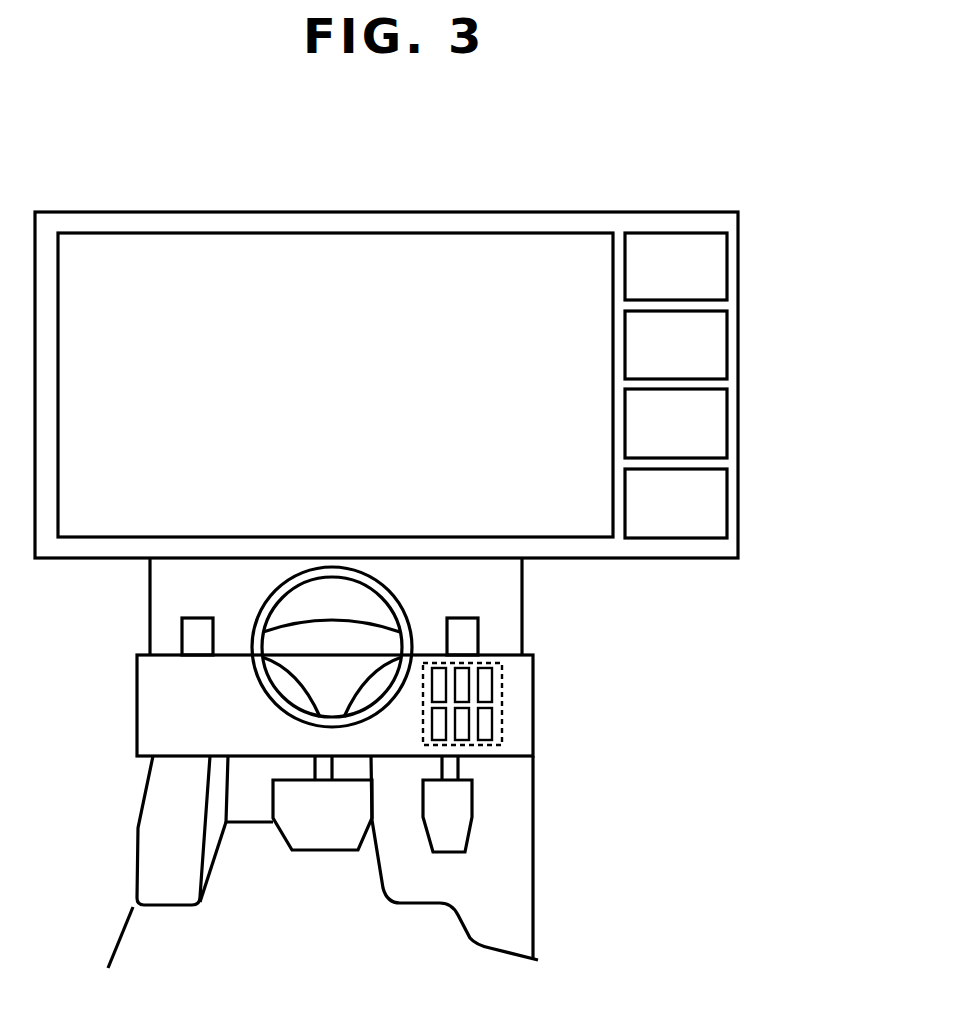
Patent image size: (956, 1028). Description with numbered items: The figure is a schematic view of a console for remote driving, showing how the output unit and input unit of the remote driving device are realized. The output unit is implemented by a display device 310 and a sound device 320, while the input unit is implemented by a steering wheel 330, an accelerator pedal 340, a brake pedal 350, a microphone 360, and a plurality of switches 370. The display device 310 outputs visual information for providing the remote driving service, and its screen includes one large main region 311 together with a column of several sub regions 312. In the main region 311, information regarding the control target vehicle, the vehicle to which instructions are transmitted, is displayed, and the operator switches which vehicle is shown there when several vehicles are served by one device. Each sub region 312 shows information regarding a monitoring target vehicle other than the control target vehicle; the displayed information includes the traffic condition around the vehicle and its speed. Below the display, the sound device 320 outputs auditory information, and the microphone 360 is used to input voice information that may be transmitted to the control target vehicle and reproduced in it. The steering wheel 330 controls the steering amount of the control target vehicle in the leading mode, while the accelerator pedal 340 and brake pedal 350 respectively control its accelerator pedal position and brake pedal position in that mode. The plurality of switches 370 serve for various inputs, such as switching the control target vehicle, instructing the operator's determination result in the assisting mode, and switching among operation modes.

The display device 310 is at (397, 212).
The main region 311 is at (222, 232).
The sub region 312 is at (727, 273).
The sound device 320 is at (462, 637).
The steering wheel 330 is at (255, 677).
The accelerator pedal 340 is at (450, 832).
The brake pedal 350 is at (327, 822).
The microphone 360 is at (197, 638).
The plurality of switches 370 is at (502, 700).